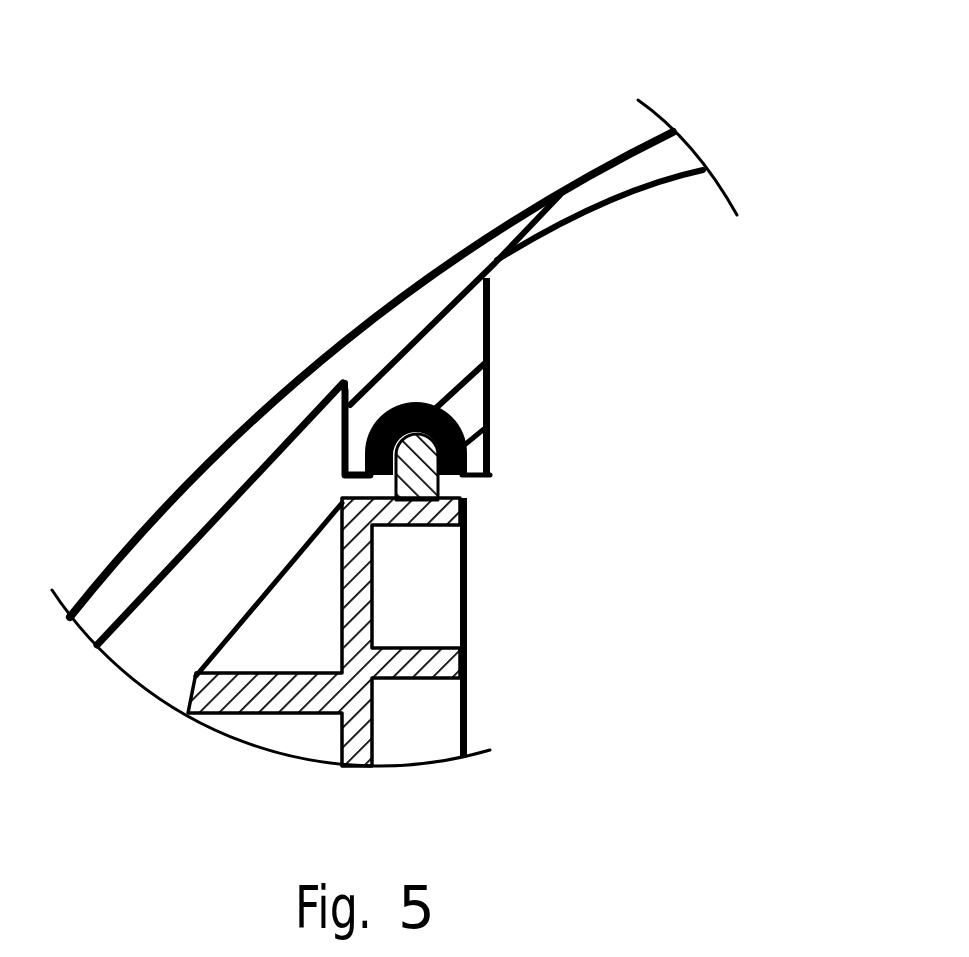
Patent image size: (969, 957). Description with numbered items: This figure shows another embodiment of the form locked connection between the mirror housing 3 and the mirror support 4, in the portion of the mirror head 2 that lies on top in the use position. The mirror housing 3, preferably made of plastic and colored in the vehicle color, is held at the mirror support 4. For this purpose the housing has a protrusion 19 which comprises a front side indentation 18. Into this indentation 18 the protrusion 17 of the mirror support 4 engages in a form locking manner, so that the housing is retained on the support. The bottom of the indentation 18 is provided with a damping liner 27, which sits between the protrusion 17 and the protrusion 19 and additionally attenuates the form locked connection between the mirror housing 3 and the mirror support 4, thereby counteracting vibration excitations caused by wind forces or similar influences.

The mirror head 2 is at (636, 61).
The mirror housing 3 is at (498, 252).
The protrusion 19 is at (357, 417).
The damping liner 27 is at (399, 402).
The front side indentation 18 is at (458, 403).
The protrusion 17 is at (463, 490).
The mirror support 4 is at (436, 607).